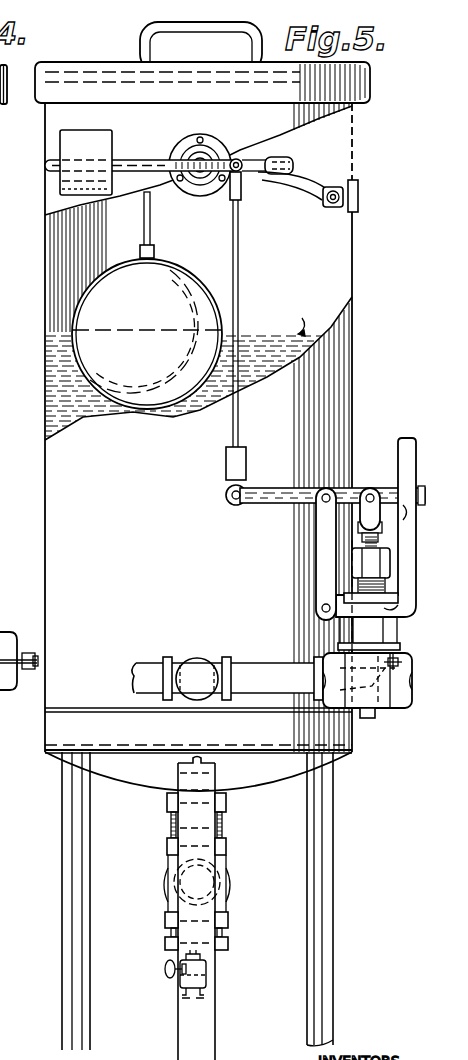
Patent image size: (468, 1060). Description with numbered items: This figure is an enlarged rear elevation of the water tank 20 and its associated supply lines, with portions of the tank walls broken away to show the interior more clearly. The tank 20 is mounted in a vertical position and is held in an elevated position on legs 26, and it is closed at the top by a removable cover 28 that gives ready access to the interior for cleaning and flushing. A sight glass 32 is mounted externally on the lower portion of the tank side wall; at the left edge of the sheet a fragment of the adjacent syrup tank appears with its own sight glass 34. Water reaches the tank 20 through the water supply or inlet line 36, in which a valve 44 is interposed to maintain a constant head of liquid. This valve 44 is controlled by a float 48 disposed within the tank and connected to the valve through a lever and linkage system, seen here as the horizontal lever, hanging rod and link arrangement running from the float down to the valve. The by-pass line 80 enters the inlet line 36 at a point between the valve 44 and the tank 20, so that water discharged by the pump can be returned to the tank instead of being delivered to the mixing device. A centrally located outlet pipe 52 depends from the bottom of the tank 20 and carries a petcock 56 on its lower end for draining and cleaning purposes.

In FIG. 5, the water tank 20 is at (354, 158).
In FIG. 5, the legs 26 is at (90, 1022).
In FIG. 5, the removable cover 28 is at (372, 82).
In FIG. 5, the sight glass 32 is at (378, 700).
In FIG. 4, the sight glass 34 is at (10, 695).
In FIG. 5, the water supply or inlet line 36 is at (418, 676).
In FIG. 5, the valve 44 is at (368, 718).
In FIG. 5, the float 48 is at (100, 321).
In FIG. 5, the outlet pipe 52 is at (232, 858).
In FIG. 5, the petcock 56 is at (212, 966).
In FIG. 5, the by-pass line 80 is at (143, 662).